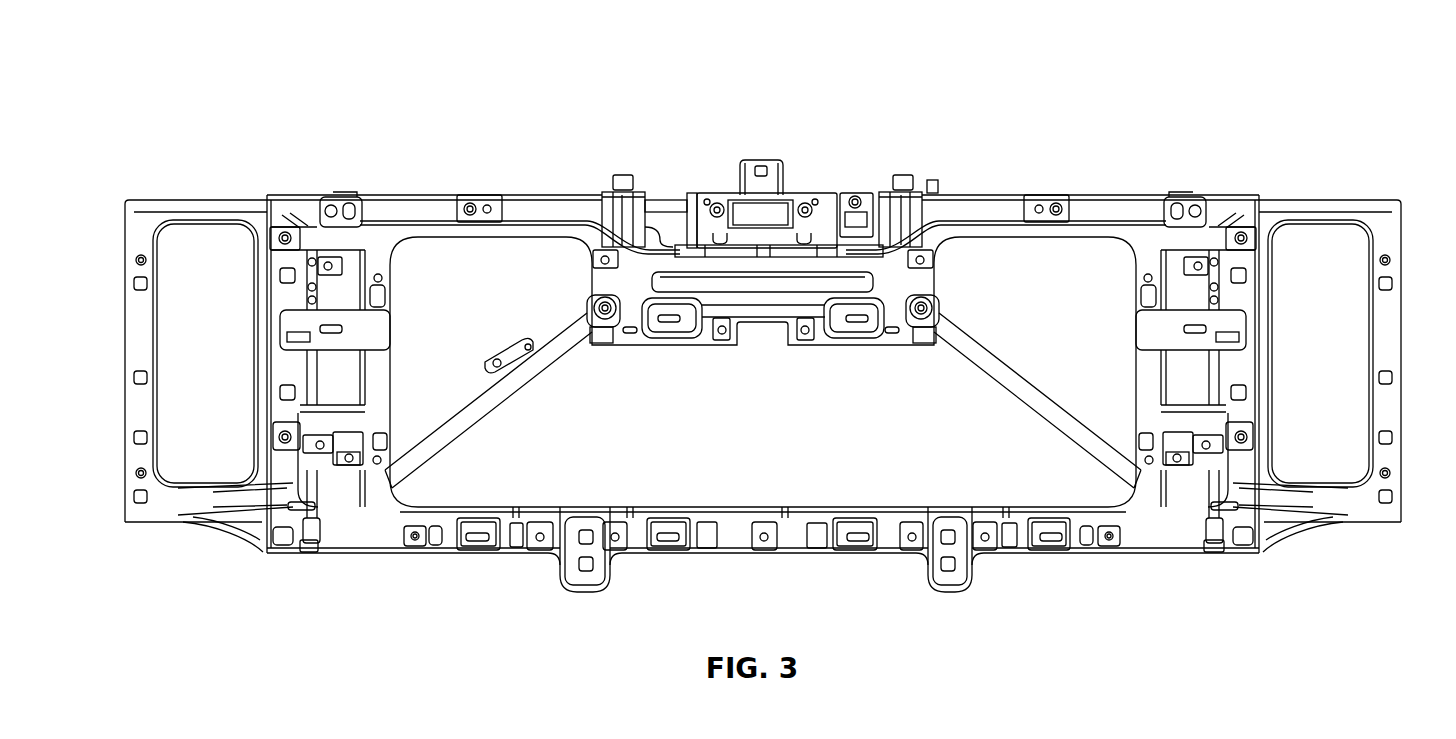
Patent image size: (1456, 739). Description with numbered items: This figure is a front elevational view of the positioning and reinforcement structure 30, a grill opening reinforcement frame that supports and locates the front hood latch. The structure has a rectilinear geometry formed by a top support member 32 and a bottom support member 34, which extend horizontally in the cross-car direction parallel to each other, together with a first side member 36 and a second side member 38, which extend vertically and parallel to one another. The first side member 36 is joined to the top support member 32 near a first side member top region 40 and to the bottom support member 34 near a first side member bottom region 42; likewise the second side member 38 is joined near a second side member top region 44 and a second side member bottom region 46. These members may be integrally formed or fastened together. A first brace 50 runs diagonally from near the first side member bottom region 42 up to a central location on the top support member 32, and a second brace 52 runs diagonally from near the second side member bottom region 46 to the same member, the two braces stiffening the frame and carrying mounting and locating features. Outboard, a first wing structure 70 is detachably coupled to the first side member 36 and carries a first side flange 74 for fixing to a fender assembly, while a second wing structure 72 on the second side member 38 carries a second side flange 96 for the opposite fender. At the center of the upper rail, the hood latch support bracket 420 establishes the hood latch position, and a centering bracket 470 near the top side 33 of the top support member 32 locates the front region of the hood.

The positioning and reinforcement structure 30 is at (1170, 68).
The top support member 32 is at (560, 206).
The top side 33 is at (571, 194).
The bottom support member 34 is at (738, 560).
The first side member 36 is at (285, 407).
The second side member 38 is at (1218, 360).
The first side member top region 40 is at (328, 205).
The first side member bottom region 42 is at (297, 552).
The second side member top region 44 is at (1204, 207).
The second side member bottom region 46 is at (1210, 552).
The first brace 50 is at (470, 413).
The second brace 52 is at (1058, 415).
The first wing structure 70 is at (198, 156).
The second wing structure 72 is at (1340, 170).
The first side flange 74 is at (133, 350).
The second side flange 96 is at (1382, 308).
The hood latch support bracket 420 is at (809, 188).
The centering bracket 470 is at (861, 204).